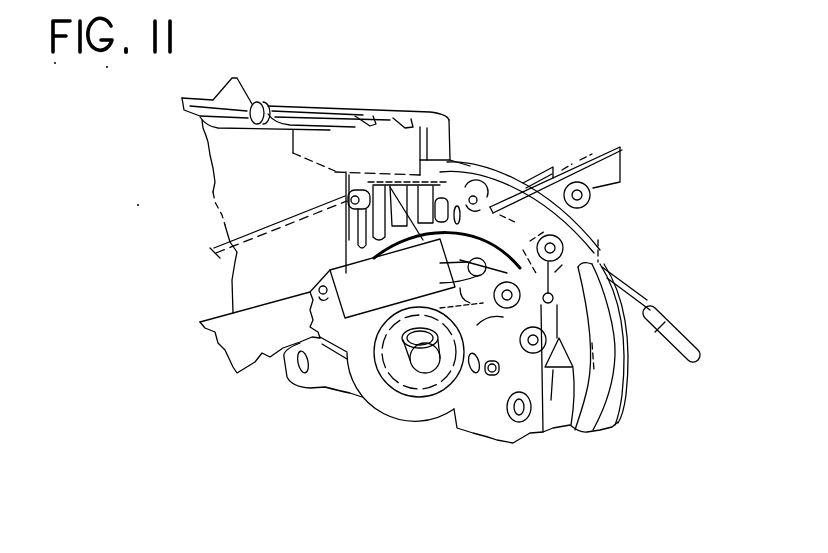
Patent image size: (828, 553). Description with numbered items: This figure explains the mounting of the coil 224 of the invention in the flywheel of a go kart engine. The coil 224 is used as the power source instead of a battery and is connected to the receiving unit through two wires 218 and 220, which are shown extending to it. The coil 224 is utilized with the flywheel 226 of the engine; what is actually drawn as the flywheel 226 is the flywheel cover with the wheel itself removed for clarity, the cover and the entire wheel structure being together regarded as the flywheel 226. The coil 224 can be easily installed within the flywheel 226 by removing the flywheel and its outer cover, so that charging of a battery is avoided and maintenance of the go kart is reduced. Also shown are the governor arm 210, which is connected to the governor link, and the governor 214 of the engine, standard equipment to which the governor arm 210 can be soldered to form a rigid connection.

The governor arm 210 is at (437, 117).
The governor 214 is at (362, 110).
The wire 218 is at (412, 240).
The wire 220 is at (412, 240).
The coil 224 is at (330, 270).
The flywheel 226 is at (545, 432).